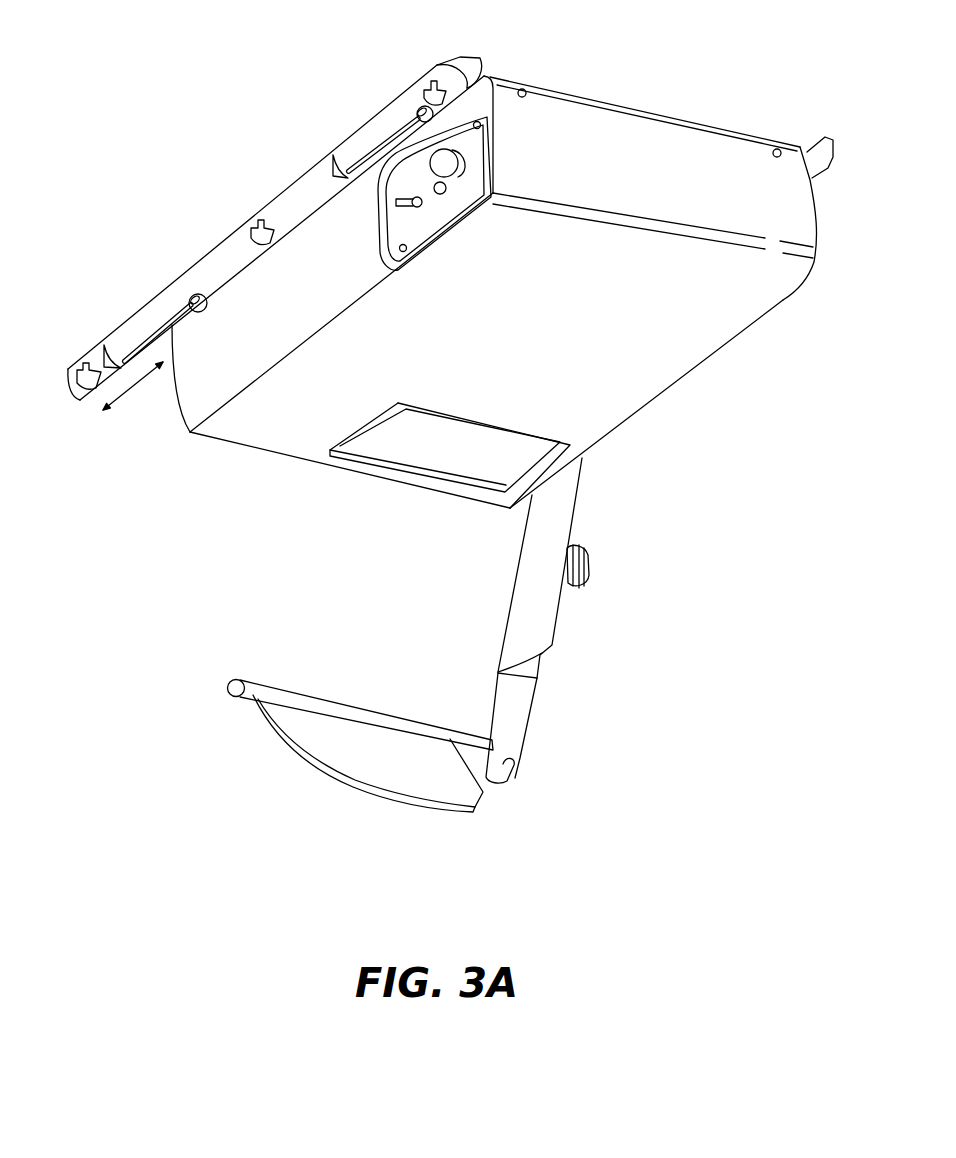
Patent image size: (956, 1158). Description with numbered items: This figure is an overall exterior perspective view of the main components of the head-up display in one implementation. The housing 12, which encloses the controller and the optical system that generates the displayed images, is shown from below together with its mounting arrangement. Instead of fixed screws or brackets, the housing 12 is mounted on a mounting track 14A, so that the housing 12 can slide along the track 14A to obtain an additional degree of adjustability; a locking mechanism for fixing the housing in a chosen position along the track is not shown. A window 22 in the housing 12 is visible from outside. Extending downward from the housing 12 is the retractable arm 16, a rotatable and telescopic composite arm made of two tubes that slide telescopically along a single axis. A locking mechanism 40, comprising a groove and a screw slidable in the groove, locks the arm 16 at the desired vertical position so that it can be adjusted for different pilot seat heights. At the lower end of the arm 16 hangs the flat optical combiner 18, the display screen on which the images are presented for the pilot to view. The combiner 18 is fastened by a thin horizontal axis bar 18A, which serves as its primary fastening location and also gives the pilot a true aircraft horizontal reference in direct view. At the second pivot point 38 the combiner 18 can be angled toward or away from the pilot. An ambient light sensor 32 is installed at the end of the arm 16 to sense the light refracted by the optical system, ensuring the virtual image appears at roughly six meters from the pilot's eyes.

The housing 12 is at (627, 123).
The mounting track 14A is at (212, 262).
The window 22 is at (435, 460).
The retractable arm 16 is at (538, 678).
The second pivot point 38 is at (573, 540).
The locking mechanism 40 is at (590, 587).
The ambient light sensor 32 is at (513, 780).
The horizontal axis bar 18A is at (363, 712).
The optical combiner 18 is at (393, 787).